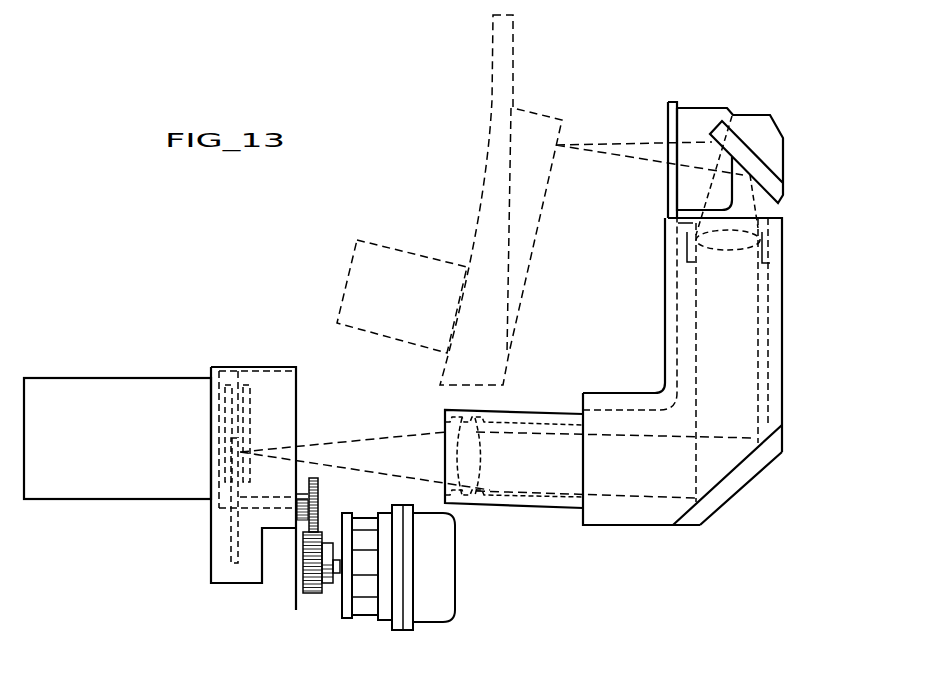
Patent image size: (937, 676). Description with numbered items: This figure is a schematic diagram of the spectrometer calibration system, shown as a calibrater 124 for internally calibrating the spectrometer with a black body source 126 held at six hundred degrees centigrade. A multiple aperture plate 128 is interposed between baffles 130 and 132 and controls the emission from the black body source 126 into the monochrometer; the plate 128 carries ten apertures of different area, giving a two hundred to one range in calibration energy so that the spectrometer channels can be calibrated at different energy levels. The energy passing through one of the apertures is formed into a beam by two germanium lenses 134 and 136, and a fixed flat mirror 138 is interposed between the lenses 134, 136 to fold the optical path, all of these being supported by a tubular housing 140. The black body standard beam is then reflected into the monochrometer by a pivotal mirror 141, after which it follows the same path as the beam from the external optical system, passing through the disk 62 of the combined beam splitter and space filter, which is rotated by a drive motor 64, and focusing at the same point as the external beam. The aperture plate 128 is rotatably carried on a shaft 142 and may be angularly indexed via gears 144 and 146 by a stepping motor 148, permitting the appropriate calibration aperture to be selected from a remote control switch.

The disk 62 is at (527, 112).
The drive motor 64 is at (397, 251).
The calibrater 124 is at (220, 258).
The black body source 126 is at (71, 393).
The multiple aperture plate 128 is at (232, 526).
The baffle 130 is at (232, 385).
The baffle 132 is at (250, 387).
The germanium lens 134 is at (483, 448).
The germanium lens 136 is at (737, 250).
The fixed flat mirror 138 is at (748, 476).
The tubular housing 140 is at (633, 526).
The pivotal mirror 141 is at (749, 147).
The shaft 142 is at (248, 497).
The gear 144 is at (318, 500).
The gear 146 is at (314, 594).
The stepping motor 148 is at (456, 552).